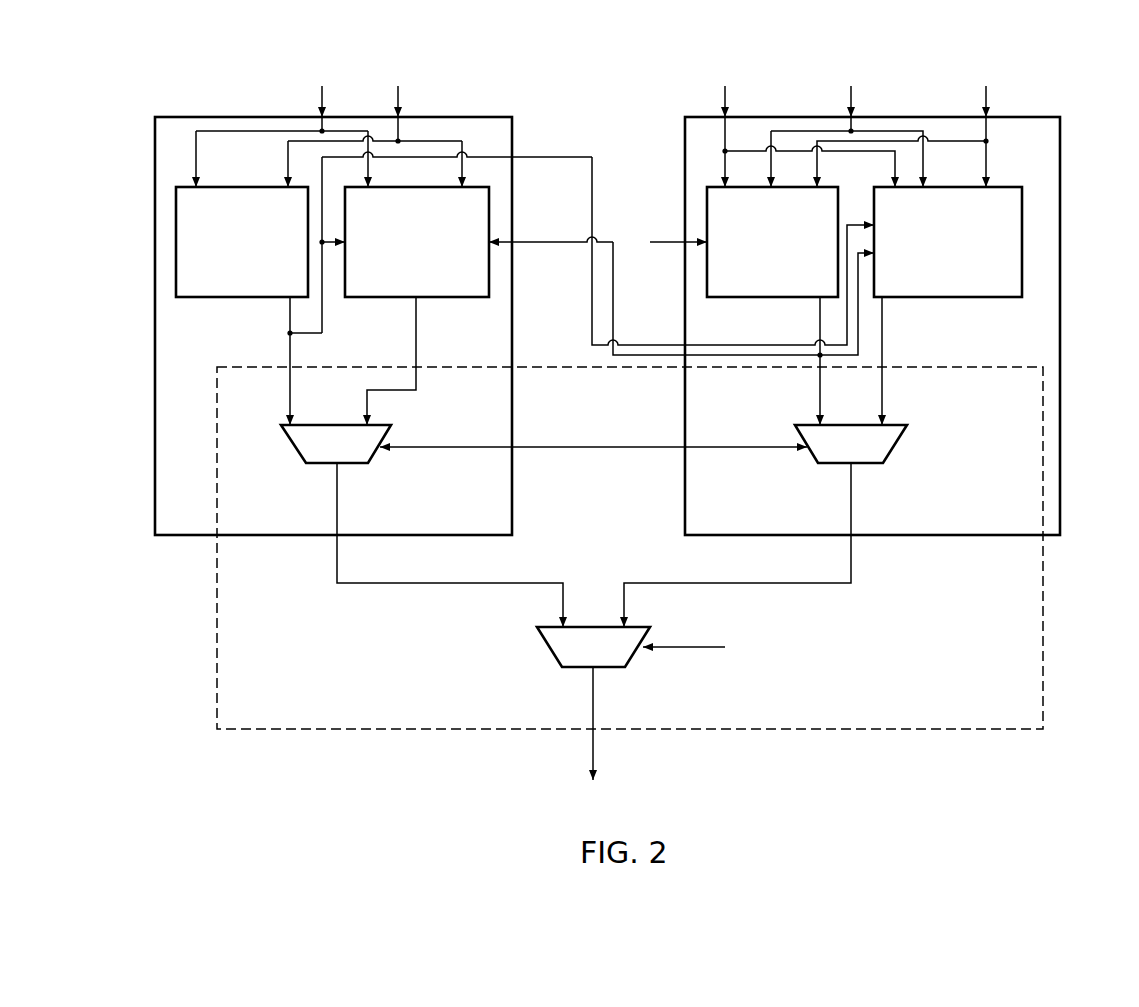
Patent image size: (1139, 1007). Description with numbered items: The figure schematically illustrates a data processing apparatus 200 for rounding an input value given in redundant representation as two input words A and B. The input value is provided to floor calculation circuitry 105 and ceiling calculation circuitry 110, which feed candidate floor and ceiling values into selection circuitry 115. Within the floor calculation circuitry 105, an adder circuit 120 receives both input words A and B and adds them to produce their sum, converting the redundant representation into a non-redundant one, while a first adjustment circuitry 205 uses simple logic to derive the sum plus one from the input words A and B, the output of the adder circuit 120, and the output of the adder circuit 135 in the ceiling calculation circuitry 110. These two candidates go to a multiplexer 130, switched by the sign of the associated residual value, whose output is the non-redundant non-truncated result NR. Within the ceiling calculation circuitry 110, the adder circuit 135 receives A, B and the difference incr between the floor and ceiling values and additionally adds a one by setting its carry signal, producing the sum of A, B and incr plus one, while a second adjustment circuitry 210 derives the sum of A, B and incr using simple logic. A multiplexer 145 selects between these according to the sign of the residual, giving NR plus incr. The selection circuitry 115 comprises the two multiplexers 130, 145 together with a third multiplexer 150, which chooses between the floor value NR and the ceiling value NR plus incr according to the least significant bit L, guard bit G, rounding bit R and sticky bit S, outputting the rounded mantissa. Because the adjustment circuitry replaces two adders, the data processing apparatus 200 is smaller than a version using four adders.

The floor calculation circuitry 105 is at (190, 536).
The ceiling calculation circuitry 110 is at (1053, 537).
The selection circuitry 115 is at (1043, 693).
The adder circuit 120 is at (195, 298).
The multiplexer 130 is at (297, 456).
The adder circuit 135 is at (704, 264).
The multiplexer 145 is at (816, 466).
The third multiplexer 150 is at (548, 646).
The data processing apparatus 200 is at (838, 755).
The first adjustment circuitry 205 is at (490, 253).
The second adjustment circuitry 210 is at (1023, 225).